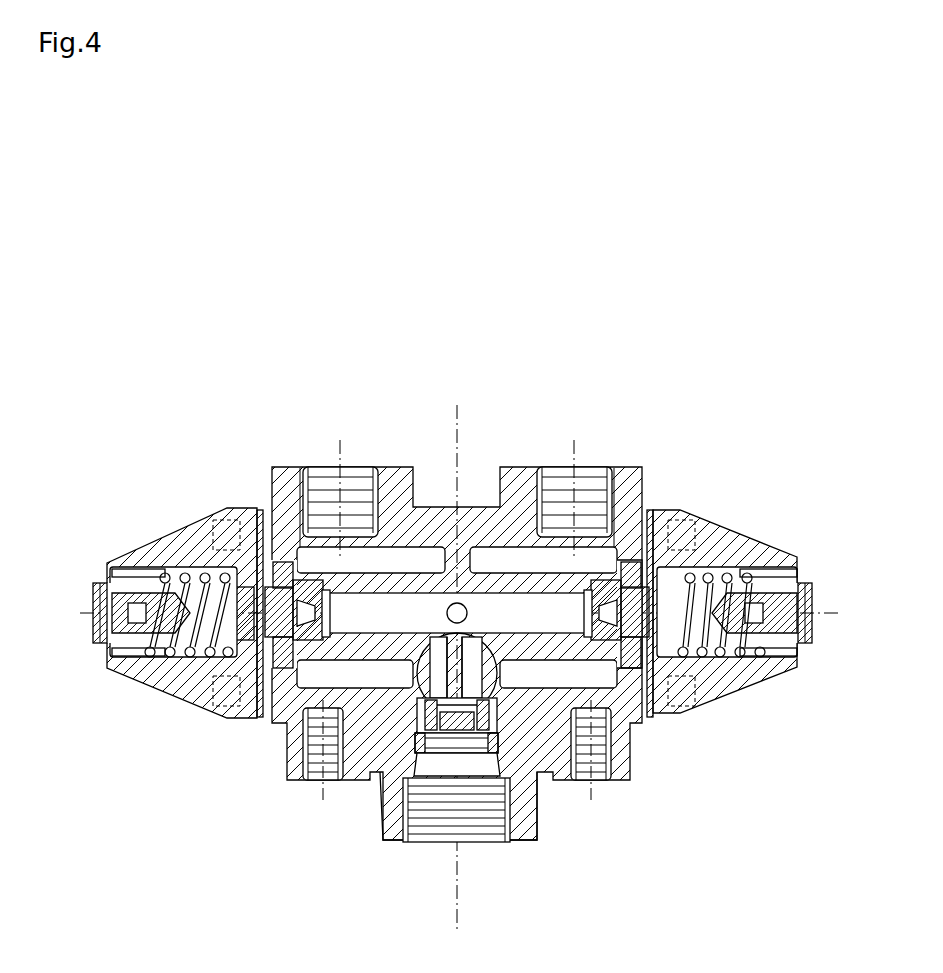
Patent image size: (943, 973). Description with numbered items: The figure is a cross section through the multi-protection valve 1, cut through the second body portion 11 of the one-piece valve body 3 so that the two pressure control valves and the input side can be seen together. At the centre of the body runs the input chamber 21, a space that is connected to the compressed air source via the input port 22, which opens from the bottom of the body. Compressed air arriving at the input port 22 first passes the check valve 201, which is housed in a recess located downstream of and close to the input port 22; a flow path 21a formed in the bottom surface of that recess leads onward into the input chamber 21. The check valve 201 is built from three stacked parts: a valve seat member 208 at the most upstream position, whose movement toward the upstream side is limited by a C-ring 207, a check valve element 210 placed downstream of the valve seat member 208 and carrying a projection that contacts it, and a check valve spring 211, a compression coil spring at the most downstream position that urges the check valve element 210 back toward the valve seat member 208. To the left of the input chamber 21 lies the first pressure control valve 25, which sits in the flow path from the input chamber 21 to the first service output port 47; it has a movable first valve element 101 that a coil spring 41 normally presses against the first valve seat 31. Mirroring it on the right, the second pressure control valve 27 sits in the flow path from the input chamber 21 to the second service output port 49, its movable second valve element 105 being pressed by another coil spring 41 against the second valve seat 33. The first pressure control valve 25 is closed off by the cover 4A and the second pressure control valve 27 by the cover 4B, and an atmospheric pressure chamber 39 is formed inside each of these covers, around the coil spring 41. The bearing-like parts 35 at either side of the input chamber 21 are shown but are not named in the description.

The multi-protection valve 1 is at (657, 356).
The valve body 3 is at (617, 780).
The cover 4A is at (147, 692).
The cover 4B is at (757, 687).
The second body portion 11 is at (475, 505).
The input chamber 21 is at (403, 610).
The flow path 21a is at (477, 677).
The input port 22 is at (420, 842).
The first pressure control valve 25 is at (168, 518).
The second pressure control valve 27 is at (735, 520).
The first valve seat 31 is at (297, 573).
The second valve seat 33 is at (617, 660).
The bearing 35 is at (256, 508).
The atmospheric pressure chamber 39 is at (195, 650).
The coil spring 41 is at (157, 577).
The first service output port 47 is at (360, 467).
The second service output port 49 is at (588, 467).
The first valve element 101 is at (285, 553).
The second valve element 105 is at (652, 510).
The check valve 201 is at (500, 854).
The C-ring 207 is at (503, 757).
The valve seat member 208 is at (417, 757).
The check valve element 210 is at (418, 752).
The check valve spring 211 is at (420, 722).